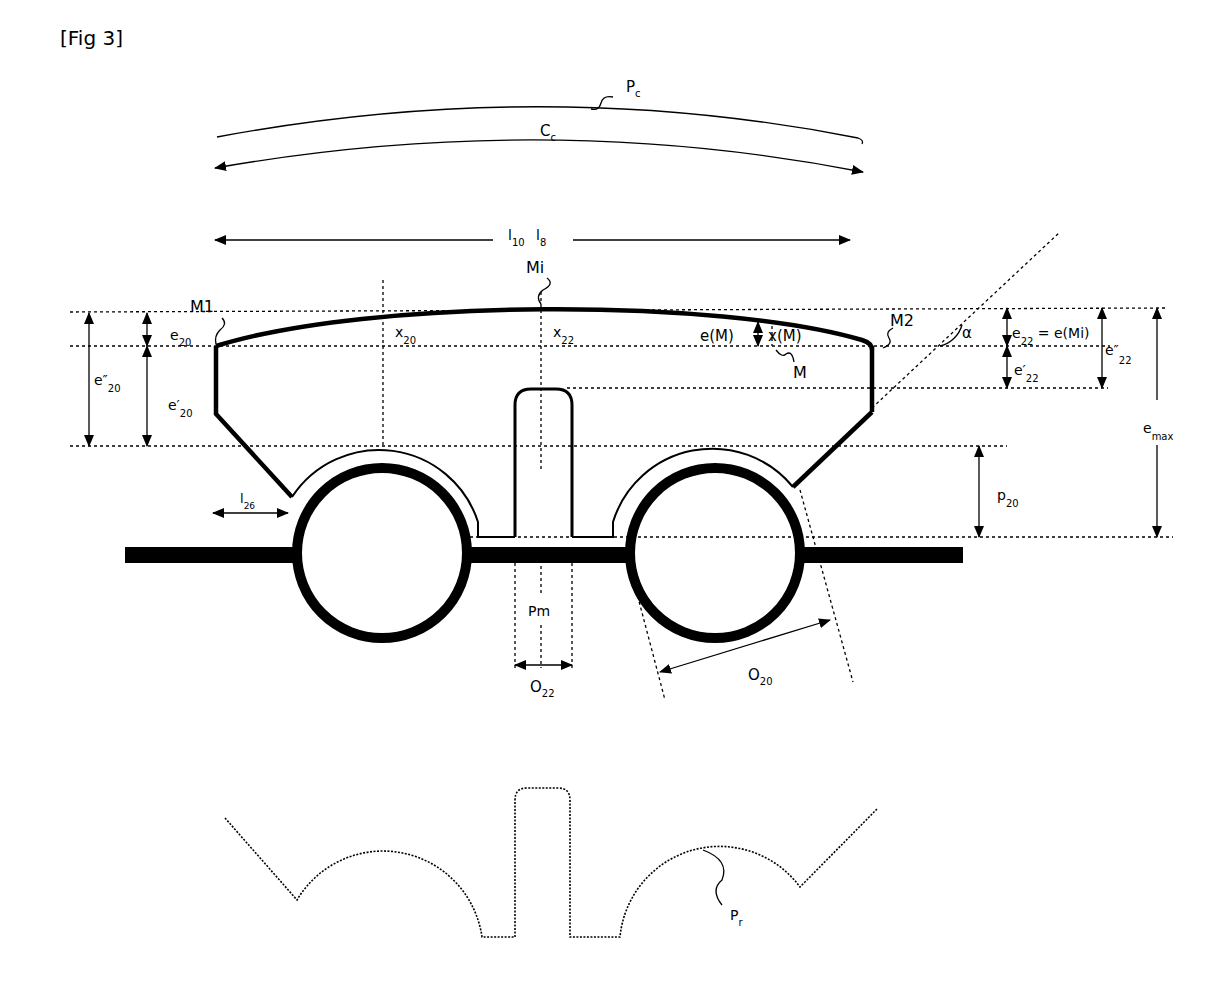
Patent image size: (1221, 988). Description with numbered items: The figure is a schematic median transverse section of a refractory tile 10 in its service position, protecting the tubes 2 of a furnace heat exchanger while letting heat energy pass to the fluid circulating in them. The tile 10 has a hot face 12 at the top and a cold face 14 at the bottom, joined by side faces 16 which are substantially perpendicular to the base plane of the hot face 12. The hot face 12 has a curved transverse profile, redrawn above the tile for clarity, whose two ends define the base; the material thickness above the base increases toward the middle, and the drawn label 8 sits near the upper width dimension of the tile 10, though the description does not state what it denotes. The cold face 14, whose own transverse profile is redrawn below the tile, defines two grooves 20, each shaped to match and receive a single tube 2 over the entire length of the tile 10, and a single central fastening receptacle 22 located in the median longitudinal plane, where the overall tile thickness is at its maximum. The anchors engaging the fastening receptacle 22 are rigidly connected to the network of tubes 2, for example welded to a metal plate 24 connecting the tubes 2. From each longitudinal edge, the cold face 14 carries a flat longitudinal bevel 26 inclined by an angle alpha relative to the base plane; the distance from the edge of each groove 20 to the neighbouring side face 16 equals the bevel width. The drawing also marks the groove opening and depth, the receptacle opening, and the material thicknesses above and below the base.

The tube 2 is at (310, 607).
The upper layer 8 is at (635, 347).
The tile 10 is at (870, 280).
The hot face 12 is at (272, 330).
The cold face 14 is at (505, 563).
The side face 16 is at (875, 378).
The groove 20 is at (307, 475).
The fastening receptacle 22 is at (553, 522).
The metal plate 24 is at (600, 563).
The longitudinal bevel 26 is at (820, 462).